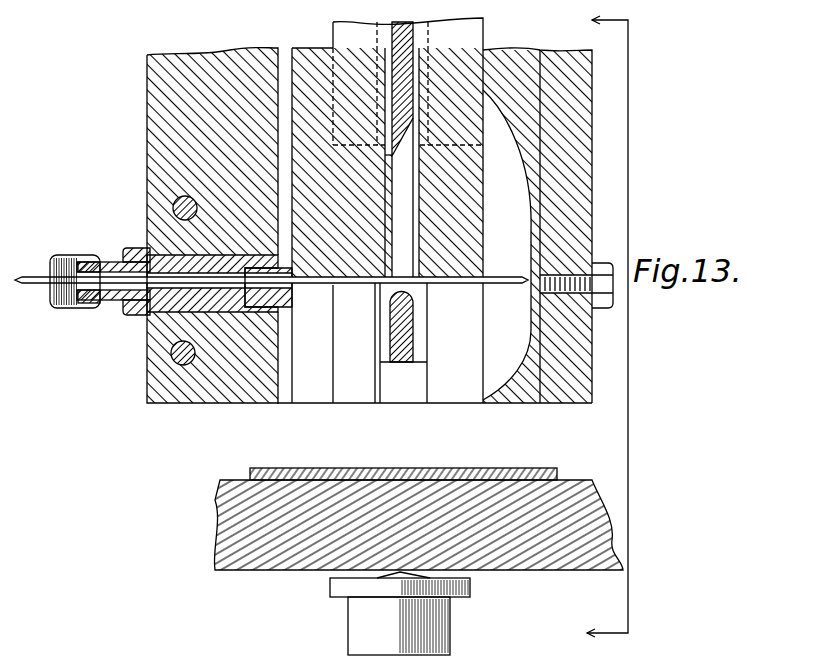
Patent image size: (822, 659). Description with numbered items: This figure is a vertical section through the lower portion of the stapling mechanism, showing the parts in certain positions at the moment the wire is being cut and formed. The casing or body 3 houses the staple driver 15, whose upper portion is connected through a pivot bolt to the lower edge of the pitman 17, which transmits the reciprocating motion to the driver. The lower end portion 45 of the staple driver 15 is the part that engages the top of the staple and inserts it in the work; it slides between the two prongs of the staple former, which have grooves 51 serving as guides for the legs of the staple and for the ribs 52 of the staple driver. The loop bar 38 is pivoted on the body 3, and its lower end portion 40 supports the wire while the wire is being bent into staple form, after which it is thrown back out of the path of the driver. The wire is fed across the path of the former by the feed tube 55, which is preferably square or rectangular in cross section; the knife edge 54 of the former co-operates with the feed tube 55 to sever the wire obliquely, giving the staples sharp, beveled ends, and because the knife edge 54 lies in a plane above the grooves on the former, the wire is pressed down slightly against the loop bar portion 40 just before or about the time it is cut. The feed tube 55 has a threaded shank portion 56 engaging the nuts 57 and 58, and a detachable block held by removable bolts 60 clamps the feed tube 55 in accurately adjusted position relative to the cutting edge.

The body 3 is at (158, 100).
The staple driver 15 is at (473, 28).
The pitman 17 is at (365, 258).
The loop bar 38 is at (420, 317).
The lower end portion of loop bar 40 is at (402, 353).
The lower end portion of staple driver 45 is at (396, 134).
The grooves 51 is at (392, 213).
The ribs 52 is at (393, 157).
The knife edge 54 is at (302, 286).
The feed tube 55 is at (173, 303).
The threaded shank portion 56 is at (113, 303).
The nut 57 is at (140, 254).
The nut 58 is at (80, 248).
The bolts 60 is at (173, 208).